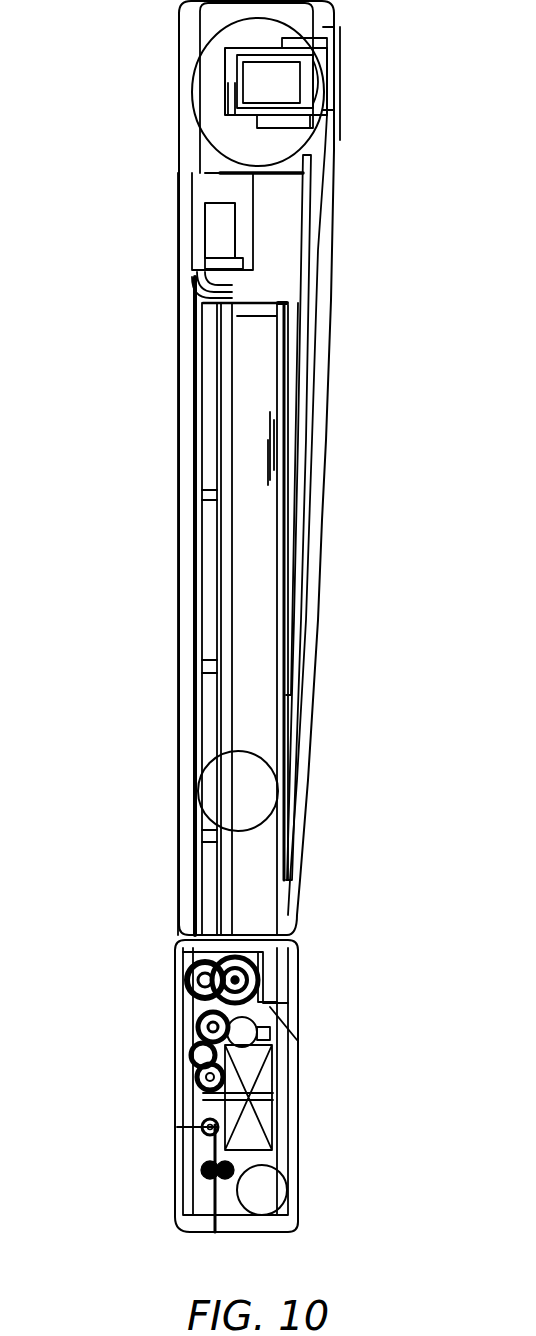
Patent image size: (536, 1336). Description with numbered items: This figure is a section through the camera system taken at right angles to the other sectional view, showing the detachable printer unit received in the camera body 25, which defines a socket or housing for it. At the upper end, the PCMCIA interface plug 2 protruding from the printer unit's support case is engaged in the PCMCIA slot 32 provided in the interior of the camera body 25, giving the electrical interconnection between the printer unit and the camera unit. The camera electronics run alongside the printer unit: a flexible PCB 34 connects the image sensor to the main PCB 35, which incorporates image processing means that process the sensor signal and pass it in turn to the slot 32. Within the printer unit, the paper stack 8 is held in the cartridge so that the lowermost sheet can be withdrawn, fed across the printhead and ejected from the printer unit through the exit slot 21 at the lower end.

The flexible PCB 34 is at (270, 167).
The PCMCIA slot 32 is at (197, 186).
The PCMCIA interface plug 2 is at (220, 238).
The main PCB 35 is at (307, 305).
The camera body 25 is at (187, 368).
The paper stack 8 is at (268, 385).
The exit slot 21 is at (215, 1234).